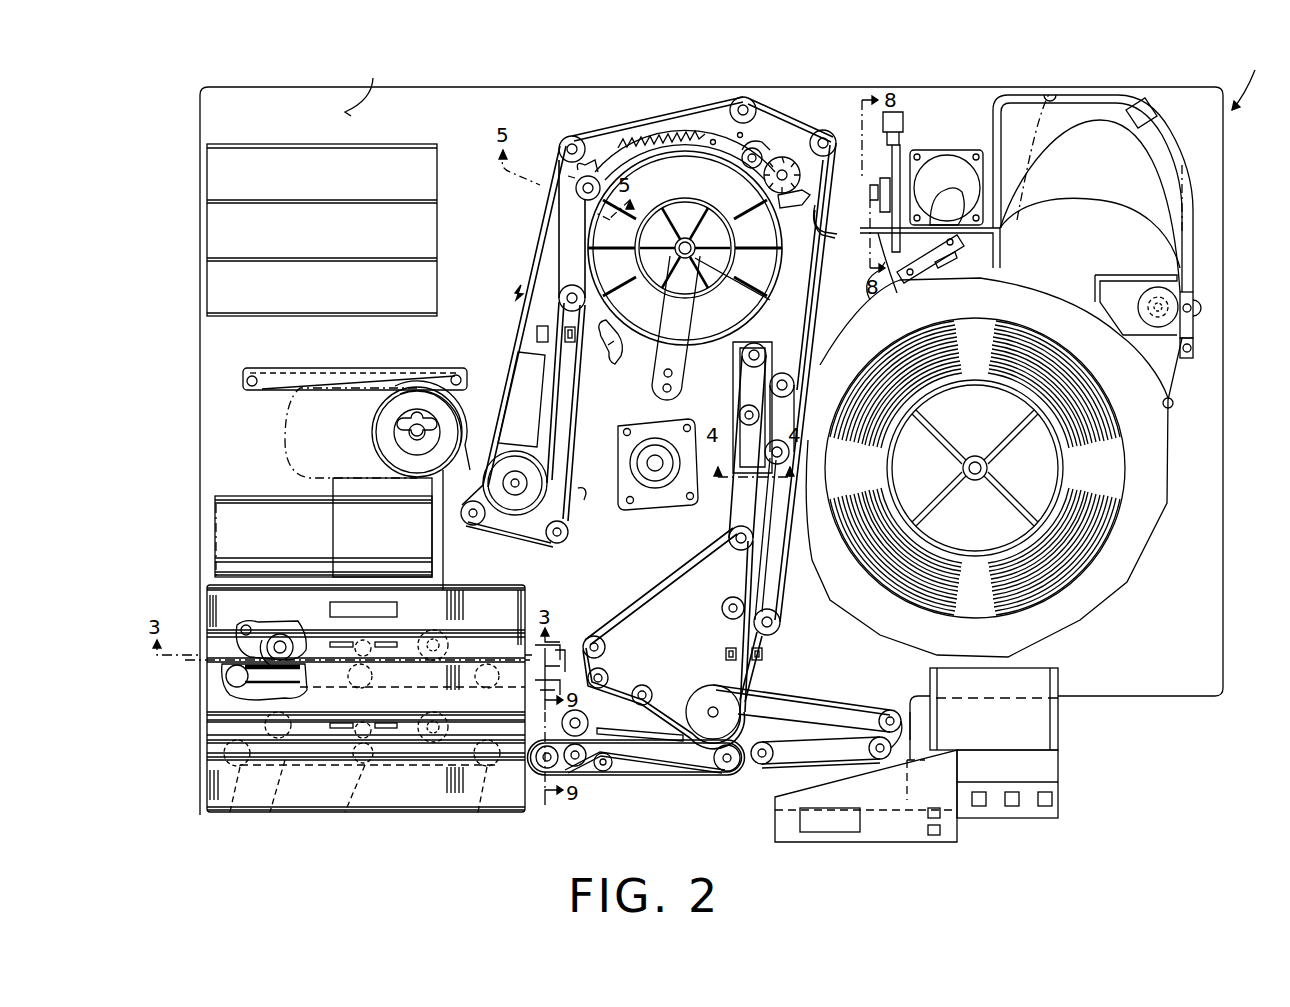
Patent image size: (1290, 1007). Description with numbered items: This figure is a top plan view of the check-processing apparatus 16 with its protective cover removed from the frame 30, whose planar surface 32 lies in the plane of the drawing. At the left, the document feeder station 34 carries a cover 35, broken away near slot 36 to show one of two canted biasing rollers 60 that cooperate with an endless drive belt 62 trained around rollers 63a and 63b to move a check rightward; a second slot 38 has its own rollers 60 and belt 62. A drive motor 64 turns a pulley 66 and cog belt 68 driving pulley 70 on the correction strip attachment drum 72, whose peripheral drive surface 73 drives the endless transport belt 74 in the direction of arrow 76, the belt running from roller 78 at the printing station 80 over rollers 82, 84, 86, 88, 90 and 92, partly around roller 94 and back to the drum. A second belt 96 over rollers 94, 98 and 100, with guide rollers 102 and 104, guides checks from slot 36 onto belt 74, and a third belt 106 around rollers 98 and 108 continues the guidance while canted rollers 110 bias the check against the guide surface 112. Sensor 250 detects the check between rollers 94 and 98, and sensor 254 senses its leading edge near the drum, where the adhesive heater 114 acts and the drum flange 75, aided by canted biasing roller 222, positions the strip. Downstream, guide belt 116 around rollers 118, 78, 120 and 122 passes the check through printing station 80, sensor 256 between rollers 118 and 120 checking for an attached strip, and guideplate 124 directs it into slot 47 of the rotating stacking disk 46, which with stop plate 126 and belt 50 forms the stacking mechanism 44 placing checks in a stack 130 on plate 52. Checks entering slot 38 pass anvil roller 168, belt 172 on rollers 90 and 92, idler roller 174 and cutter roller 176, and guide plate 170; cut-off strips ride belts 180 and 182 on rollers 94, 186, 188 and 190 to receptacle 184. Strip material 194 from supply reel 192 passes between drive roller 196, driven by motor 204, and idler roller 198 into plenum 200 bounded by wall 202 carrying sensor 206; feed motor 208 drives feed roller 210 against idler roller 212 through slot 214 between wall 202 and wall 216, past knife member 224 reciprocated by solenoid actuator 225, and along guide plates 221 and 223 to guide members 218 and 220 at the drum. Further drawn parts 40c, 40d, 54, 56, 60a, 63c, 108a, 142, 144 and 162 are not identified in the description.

The apparatus 16 is at (1256, 76).
The frame 30 is at (334, 88).
The surface 32 is at (358, 86).
The document feeder station 34 is at (330, 666).
The cover 35 is at (238, 632).
The slot 36 is at (224, 676).
The slot 38 is at (225, 742).
The control switch 40c is at (942, 815).
The control switch 40d is at (942, 833).
The stacking mechanism 44 is at (351, 451).
The check stacking disk 46 is at (385, 430).
The slot 47 is at (380, 386).
The belt 50 is at (275, 392).
The plate 52 is at (245, 572).
The paper tray 54 is at (252, 152).
The tray support 56 is at (207, 140).
The biasing rollers 60 is at (242, 630).
The print head slot 60a is at (330, 632).
The drive belt 62 is at (270, 688).
The roller 63a is at (232, 690).
The roller 63b is at (482, 660).
The guide roller 63c is at (364, 668).
The drive motor 64 is at (650, 503).
The pulley 66 is at (660, 490).
The cog belt 68 is at (645, 398).
The pulley 70 is at (706, 282).
The correction strip attachment and support drum 72 is at (575, 254).
The peripheral drive surface 73 is at (770, 300).
The transport belt 74 is at (565, 286).
The correction strip positioning flange 75 is at (772, 328).
The arrow 76 is at (517, 308).
The roller 78 is at (516, 515).
The correction strip printing station 80 is at (510, 390).
The roller 82 is at (559, 149).
The roller 84 is at (735, 98).
The roller 86 is at (827, 130).
The roller 88 is at (780, 642).
The roller 90 is at (726, 772).
The roller 92 is at (543, 772).
The roller 94 is at (705, 700).
The transport belt 96 is at (652, 596).
The roller 98 is at (742, 551).
The roller 100 is at (603, 646).
The guide roller 102 is at (607, 678).
The guide roller 104 is at (637, 703).
The transport belt 106 is at (745, 398).
The roller 108 is at (767, 352).
The pulley 108a is at (740, 415).
The canted rollers 110 is at (796, 392).
The planar guide surface 112 is at (835, 425).
The adhesive heater 114 is at (660, 128).
The guide belt 116 is at (584, 500).
The roller 118 is at (625, 278).
The roller 120 is at (470, 525).
The roller 122 is at (557, 543).
The guideplate 124 is at (395, 470).
The stop plate 126 is at (438, 540).
The stack 130 is at (228, 502).
The pulley 142 is at (758, 150).
The latch 144 is at (575, 192).
The hook 162 is at (608, 362).
The anvil roller 168 is at (528, 770).
The guide plate 170 is at (670, 750).
The belt 172 is at (665, 745).
The idler roller 174 is at (625, 780).
The roller 176 is at (575, 770).
The belt 180 is at (788, 705).
The belt 182 is at (820, 762).
The receptacle 184 is at (930, 728).
The idler roller 186 is at (890, 710).
The idler roller 188 is at (760, 765).
The idler roller 190 is at (912, 760).
The correction strip supply reel 192 is at (1060, 470).
The continuous length of correction strip material 194 is at (1160, 455).
The drive roller 196 is at (1197, 352).
The idler roller 198 is at (1198, 302).
The plenum 200 is at (1134, 170).
The plenum wall 202 is at (1050, 90).
The drive motor 204 is at (1158, 290).
The sensor 206 is at (1138, 100).
The correction strip feed motor 208 is at (930, 162).
The feed roller 210 is at (950, 190).
The idler roller 212 is at (987, 290).
The slot 214 is at (1002, 226).
The wall 216 is at (1003, 250).
The guide member 218 is at (815, 205).
The guide member 220 is at (828, 240).
The guide plate 221 is at (885, 280).
The canted biasing roller 222 is at (778, 157).
The guide plate 223 is at (855, 330).
The knife blade member 224 is at (918, 280).
The solenoid actuator 225 is at (905, 115).
The sensor 250 is at (726, 655).
The sensor 254 is at (798, 188).
The sensor 256 is at (538, 337).